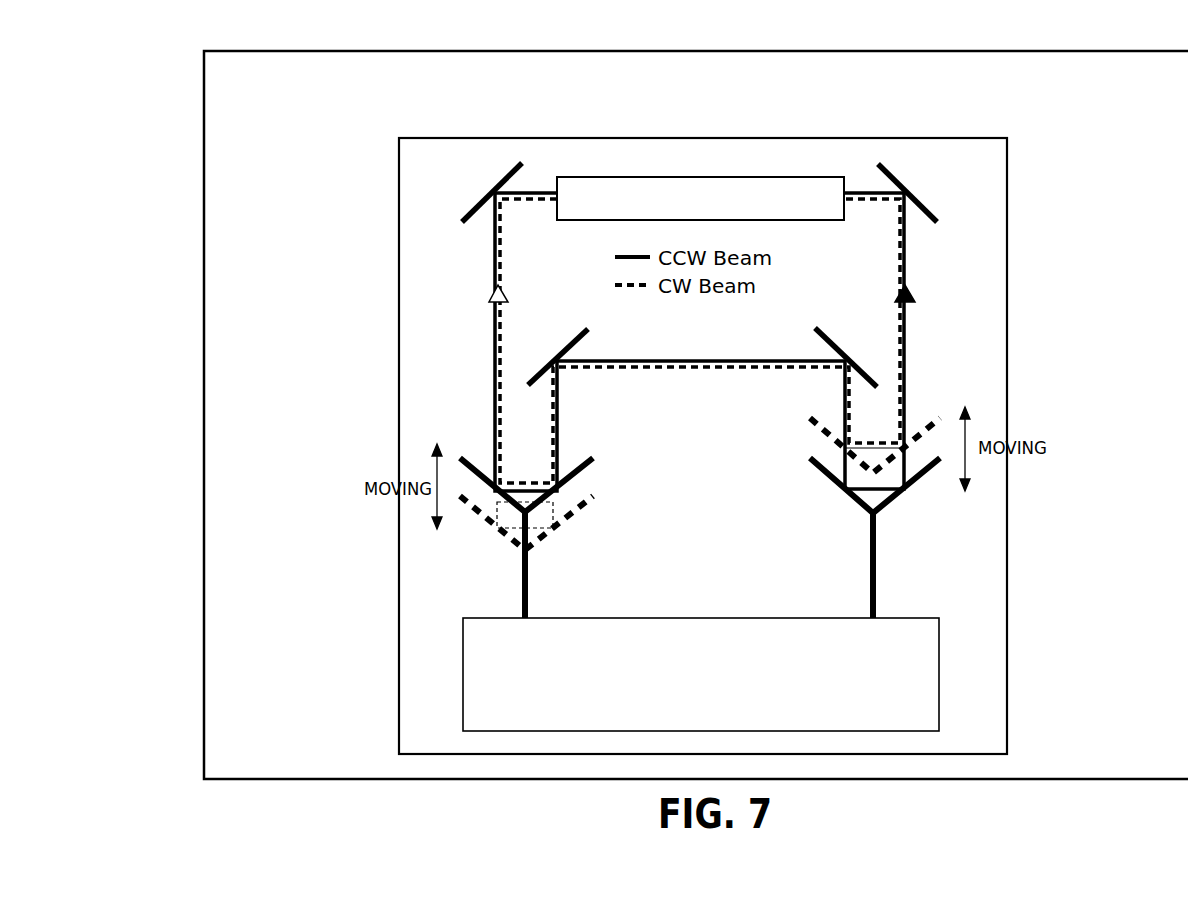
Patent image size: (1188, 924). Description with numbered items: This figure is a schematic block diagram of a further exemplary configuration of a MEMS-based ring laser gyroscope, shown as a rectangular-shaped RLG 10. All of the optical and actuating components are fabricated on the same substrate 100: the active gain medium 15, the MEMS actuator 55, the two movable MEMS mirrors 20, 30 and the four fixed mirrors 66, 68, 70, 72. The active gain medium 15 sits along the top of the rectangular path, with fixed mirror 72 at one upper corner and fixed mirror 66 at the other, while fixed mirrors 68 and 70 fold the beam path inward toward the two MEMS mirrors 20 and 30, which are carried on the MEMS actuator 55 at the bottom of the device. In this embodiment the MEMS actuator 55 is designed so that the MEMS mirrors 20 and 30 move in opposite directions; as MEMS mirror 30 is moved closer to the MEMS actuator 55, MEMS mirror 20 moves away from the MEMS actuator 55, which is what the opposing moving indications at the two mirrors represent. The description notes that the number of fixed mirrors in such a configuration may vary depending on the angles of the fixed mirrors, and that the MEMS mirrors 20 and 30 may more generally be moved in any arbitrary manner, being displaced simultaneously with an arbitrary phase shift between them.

The rectangular-shaped RLG 10 is at (179, 98).
The substrate 100 is at (1081, 93).
The active gain medium 15 is at (687, 207).
The fixed mirror 72 is at (484, 198).
The fixed mirror 66 is at (900, 178).
The fixed mirror 68 is at (556, 357).
The fixed mirror 70 is at (842, 349).
The MEMS mirror 20 is at (580, 480).
The MEMS mirror 30 is at (827, 475).
The MEMS actuator 55 is at (699, 703).